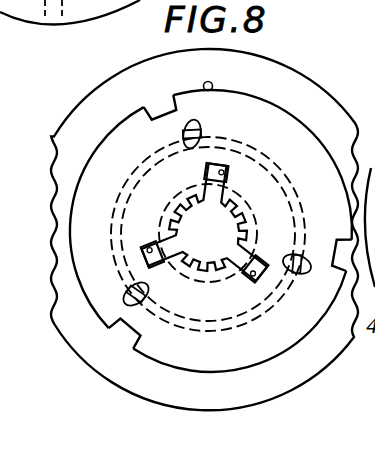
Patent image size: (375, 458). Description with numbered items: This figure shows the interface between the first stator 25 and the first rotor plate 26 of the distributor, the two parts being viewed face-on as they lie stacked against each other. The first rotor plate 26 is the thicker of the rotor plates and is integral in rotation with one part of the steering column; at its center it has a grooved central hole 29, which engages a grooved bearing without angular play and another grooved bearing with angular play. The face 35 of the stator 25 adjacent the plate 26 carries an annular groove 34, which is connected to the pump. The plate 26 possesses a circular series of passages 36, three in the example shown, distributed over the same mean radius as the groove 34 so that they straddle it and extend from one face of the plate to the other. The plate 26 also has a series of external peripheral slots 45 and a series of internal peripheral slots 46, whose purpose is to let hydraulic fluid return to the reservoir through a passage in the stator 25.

The first stator 25 is at (77, 98).
The first rotor plate 26 is at (137, 97).
The grooved central hole 29 is at (193, 200).
The annular groove 34 is at (300, 207).
The face 35 is at (298, 84).
The passages 36 is at (196, 126).
The external peripheral slots 45 is at (175, 98).
The internal peripheral slots 46 is at (223, 172).